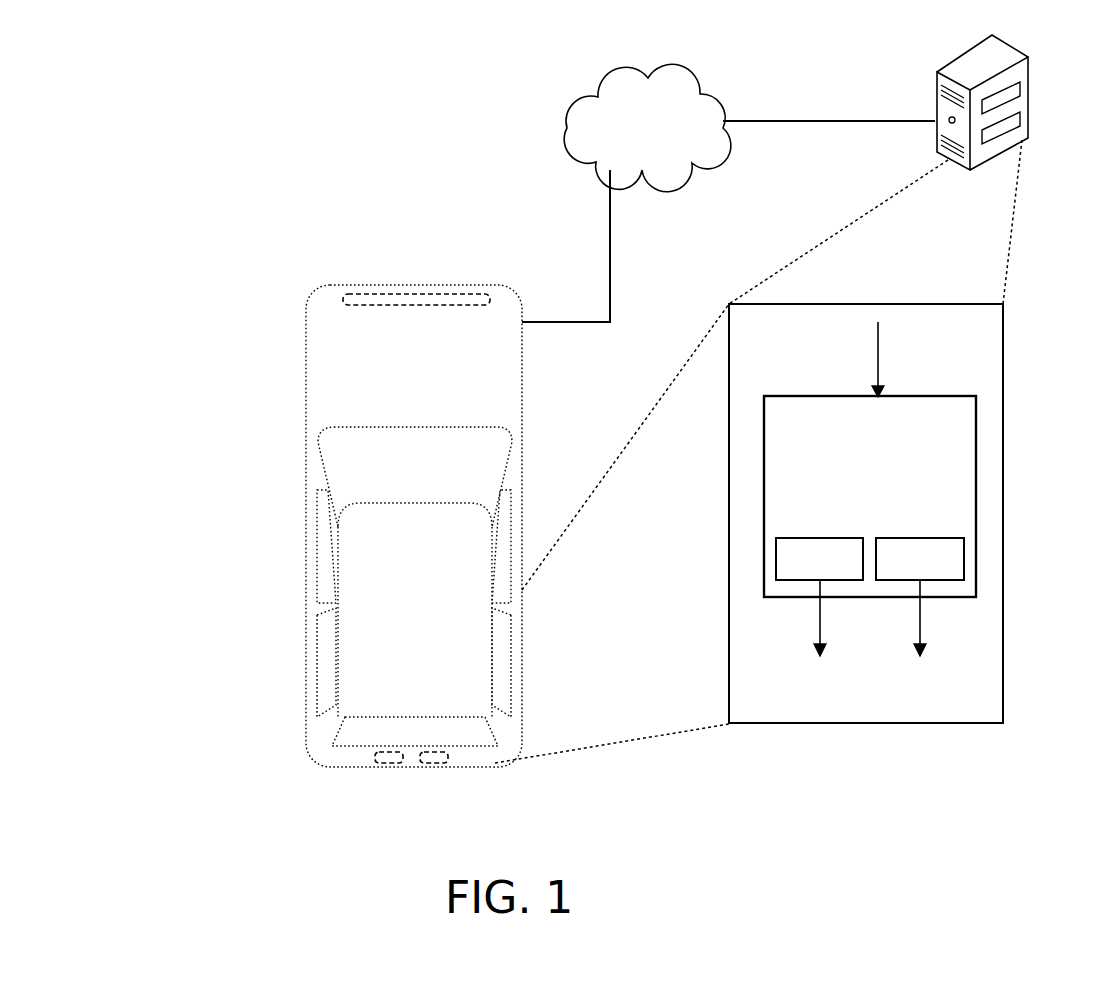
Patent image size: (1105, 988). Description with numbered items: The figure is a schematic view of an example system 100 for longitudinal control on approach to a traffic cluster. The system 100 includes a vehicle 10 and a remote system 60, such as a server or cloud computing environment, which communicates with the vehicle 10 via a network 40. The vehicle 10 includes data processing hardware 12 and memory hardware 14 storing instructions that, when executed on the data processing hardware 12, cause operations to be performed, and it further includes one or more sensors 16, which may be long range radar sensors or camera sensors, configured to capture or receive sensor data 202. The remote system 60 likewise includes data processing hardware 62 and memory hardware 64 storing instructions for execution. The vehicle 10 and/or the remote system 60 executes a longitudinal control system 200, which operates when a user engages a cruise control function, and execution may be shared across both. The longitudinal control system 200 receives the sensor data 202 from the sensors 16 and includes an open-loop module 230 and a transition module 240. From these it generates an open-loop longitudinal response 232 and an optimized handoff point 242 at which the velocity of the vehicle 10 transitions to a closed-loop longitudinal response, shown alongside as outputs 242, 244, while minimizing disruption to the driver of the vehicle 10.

The system 100 is at (152, 103).
The vehicle 10 is at (306, 512).
The data processing hardware 12 is at (434, 764).
The memory hardware 14 is at (389, 764).
The sensors 16 is at (343, 300).
The network 40 is at (647, 127).
The remote system 60 is at (967, 45).
The data processing hardware 62 is at (1024, 86).
The memory hardware 64 is at (1026, 113).
The longitudinal control system 200 is at (870, 496).
The sensor data 202 is at (880, 368).
The open-loop module 230 is at (819, 559).
The open-loop longitudinal response 232 is at (818, 634).
The transition module 240 is at (920, 559).
The optimized handoff point 242 is at (900, 634).
The output 244 is at (940, 677).